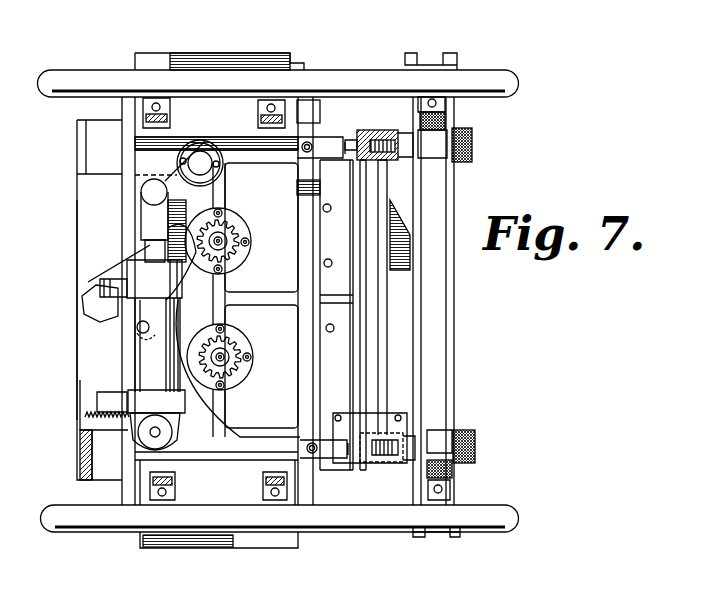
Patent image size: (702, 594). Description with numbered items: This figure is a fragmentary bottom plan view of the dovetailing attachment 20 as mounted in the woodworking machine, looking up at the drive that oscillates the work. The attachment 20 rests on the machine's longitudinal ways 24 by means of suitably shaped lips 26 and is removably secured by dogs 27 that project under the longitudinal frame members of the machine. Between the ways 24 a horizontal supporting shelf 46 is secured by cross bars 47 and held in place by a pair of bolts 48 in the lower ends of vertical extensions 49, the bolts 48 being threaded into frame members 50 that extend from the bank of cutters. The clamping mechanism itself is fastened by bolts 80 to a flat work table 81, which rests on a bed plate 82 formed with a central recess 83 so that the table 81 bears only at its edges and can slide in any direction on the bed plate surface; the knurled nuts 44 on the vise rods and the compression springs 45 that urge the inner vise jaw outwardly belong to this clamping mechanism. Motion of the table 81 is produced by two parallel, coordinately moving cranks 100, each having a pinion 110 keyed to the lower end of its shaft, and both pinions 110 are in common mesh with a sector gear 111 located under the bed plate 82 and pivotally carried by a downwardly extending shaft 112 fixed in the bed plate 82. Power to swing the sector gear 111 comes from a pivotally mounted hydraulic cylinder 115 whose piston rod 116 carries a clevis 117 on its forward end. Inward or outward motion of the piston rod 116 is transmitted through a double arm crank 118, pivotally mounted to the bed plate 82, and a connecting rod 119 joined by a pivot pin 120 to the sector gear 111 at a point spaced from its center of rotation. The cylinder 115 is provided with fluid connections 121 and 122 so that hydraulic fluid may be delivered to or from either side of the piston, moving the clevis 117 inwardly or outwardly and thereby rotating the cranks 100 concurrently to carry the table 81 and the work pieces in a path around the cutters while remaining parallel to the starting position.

The dovetailing attachment 20 is at (486, 168).
The longitudinal ways 24 is at (58, 74).
The lips 26 is at (233, 52).
The dogs 27 is at (262, 486).
The knurled nuts 44 is at (440, 122).
The compression springs 45 is at (362, 208).
The horizontal supporting shelf 46 is at (405, 345).
The cross bars 47 is at (452, 322).
The bolts 48 is at (470, 138).
The vertical extensions 49 is at (448, 156).
The frame members 50 is at (362, 133).
The bolts 80 is at (331, 260).
The work table 81 is at (339, 350).
The bed plate 82 is at (93, 199).
The central recess 83 is at (259, 190).
The cranks 100 is at (226, 238).
The pinions 110 is at (245, 250).
The sector gear 111 is at (205, 312).
The shaft 112 is at (90, 305).
The hydraulic cylinder 115 is at (145, 371).
The piston rod 116 is at (150, 253).
The clevis 117 is at (147, 224).
The double arm crank 118 is at (200, 147).
The connecting rod 119 is at (140, 315).
The pivot pin 120 is at (140, 333).
The fluid connection 121 is at (110, 397).
The fluid connection 122 is at (112, 284).